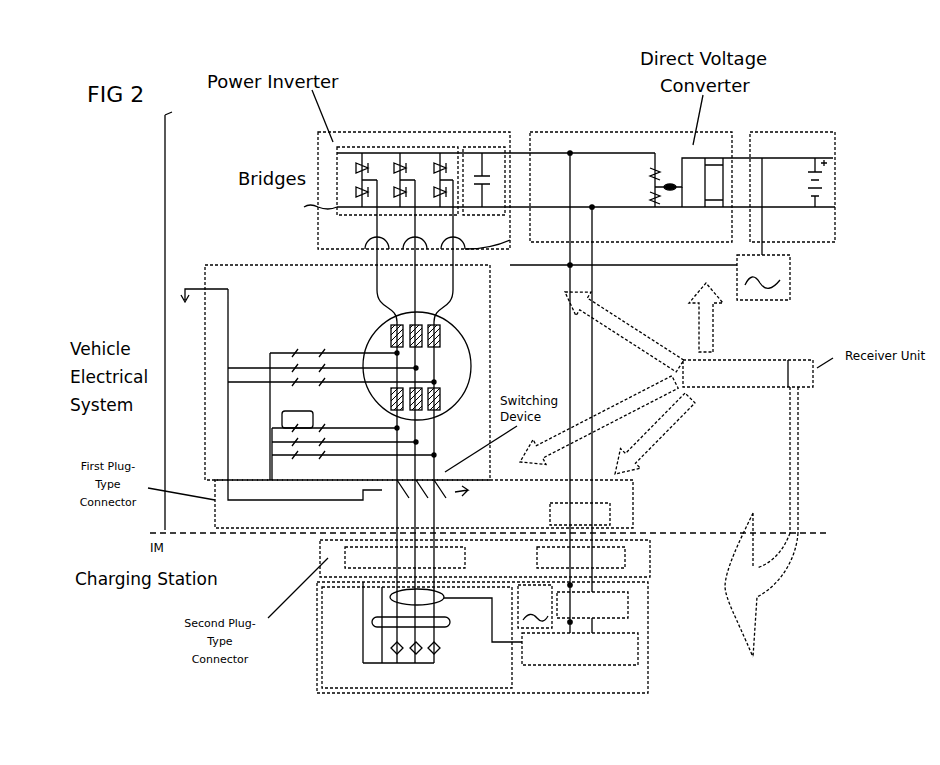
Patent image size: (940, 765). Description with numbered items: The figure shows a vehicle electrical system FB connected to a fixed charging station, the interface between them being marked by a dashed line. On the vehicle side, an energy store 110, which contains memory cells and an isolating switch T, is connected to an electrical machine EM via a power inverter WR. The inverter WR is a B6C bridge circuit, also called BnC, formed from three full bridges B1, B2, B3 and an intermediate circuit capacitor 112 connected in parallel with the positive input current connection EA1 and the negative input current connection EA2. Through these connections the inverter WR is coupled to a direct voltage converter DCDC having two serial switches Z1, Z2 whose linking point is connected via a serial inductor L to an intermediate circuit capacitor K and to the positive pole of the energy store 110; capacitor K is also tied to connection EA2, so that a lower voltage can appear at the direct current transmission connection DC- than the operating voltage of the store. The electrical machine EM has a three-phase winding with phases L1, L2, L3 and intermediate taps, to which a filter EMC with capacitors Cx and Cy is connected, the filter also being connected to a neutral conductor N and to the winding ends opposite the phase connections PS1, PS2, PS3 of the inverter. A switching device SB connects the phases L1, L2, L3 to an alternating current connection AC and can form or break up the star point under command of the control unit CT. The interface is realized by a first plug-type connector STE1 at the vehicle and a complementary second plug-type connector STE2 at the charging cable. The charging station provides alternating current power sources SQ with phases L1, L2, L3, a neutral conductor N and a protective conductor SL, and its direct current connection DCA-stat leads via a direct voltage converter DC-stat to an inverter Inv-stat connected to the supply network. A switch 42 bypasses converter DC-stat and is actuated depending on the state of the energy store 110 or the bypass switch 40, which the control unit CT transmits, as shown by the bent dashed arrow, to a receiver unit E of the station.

The intermediate circuit capacitor 112 is at (482, 145).
The energy store 110 is at (792, 187).
The bypass switch 40 is at (792, 266).
The switch 42 is at (535, 606).
The bridge B1 is at (362, 147).
The bridge B2 is at (400, 147).
The bridge B3 is at (440, 147).
The power inverter WR is at (414, 190).
The bridge circuit BnC is at (305, 208).
The electrical machine EM is at (417, 366).
The filter EMC is at (347, 372).
The direct voltage converter DCDC is at (631, 187).
The positive input current connection EA1 is at (534, 145).
The negative input current connection EA2 is at (512, 247).
The serial switch Z1 is at (650, 196).
The serial switch Z2 is at (650, 172).
The serial inductor L is at (670, 183).
The intermediate circuit capacitor K is at (690, 200).
The isolating switch T is at (790, 205).
The receiver unit E is at (800, 360).
The control unit CT is at (750, 387).
The switching device SB is at (470, 491).
The first plug-type connector STE1 is at (424, 504).
The second plug-type connector STE2 is at (485, 558).
The vehicle electrical system FB is at (257, 394).
The capacitor Cy is at (332, 410).
The capacitor Cx is at (313, 374).
The phase L1 is at (382, 420).
The phase L2 is at (440, 433).
The phase L3 is at (440, 459).
The neutral conductor N is at (286, 466).
The phase connection PS1 is at (373, 237).
The phase connection PS2 is at (373, 290).
The phase connection PS3 is at (490, 248).
The protective conductor SL is at (363, 630).
The power source SQ is at (458, 660).
The alternating current connection AC is at (325, 528).
The negative rail DC- is at (610, 514).
The direct current connection DCA-stat is at (605, 540).
The direct voltage converter DC-stat is at (592, 605).
The inverter Inv-stat is at (580, 649).